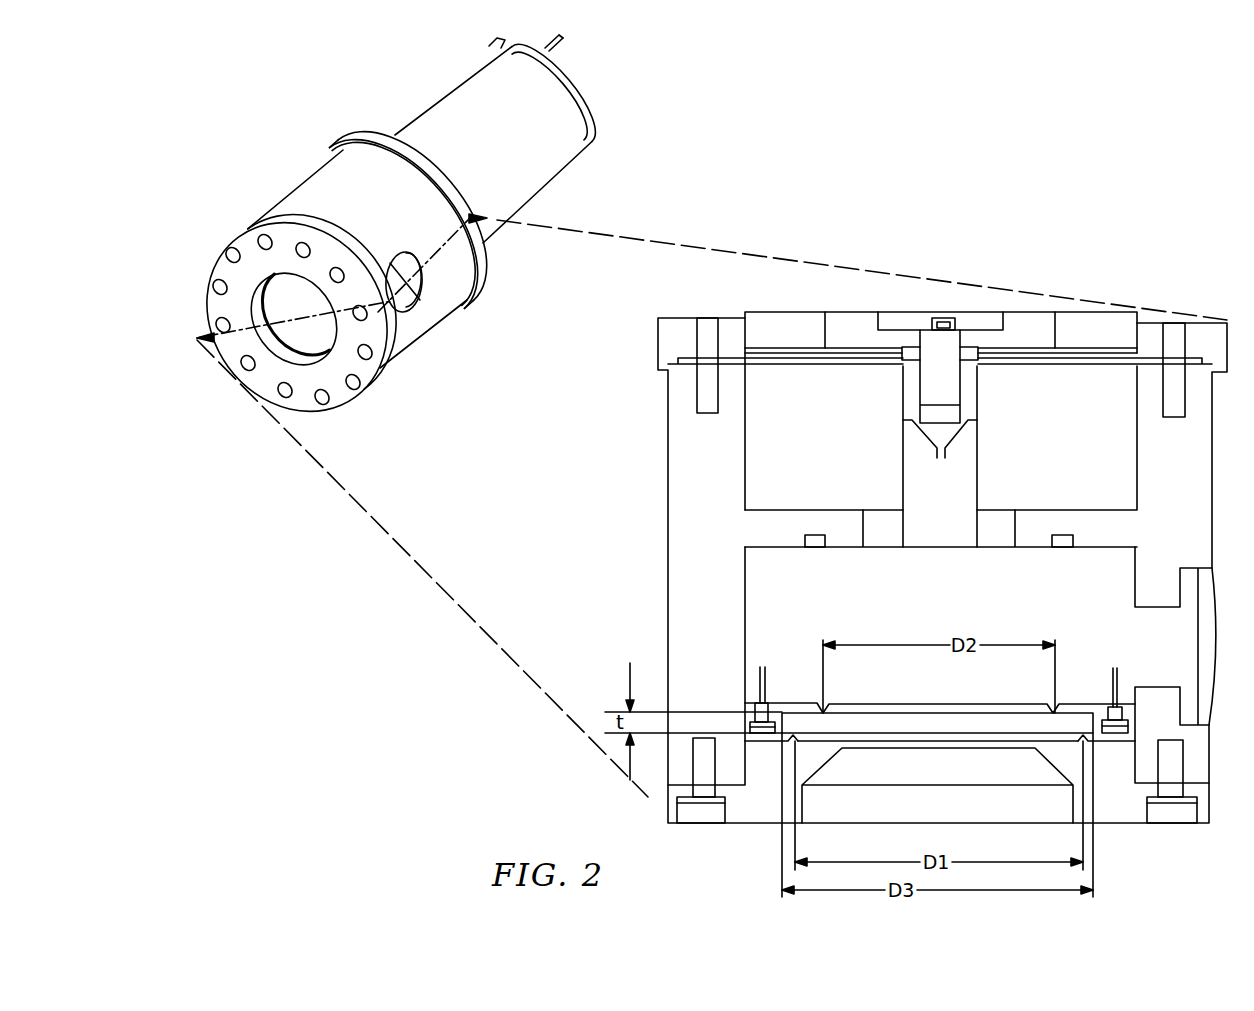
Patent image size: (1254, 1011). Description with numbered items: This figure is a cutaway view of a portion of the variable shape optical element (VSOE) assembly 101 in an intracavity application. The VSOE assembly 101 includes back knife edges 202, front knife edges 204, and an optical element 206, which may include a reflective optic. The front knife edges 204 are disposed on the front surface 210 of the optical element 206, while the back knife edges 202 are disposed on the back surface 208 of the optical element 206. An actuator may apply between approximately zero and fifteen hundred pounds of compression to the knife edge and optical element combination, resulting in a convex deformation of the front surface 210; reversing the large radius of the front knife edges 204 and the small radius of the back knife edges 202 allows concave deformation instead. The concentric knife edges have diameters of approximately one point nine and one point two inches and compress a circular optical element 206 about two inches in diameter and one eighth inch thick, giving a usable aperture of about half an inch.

The VSOE assembly 101 is at (262, 162).
The back knife edges 202 is at (822, 703).
The front knife edges 204 is at (793, 740).
The optical element 206 is at (945, 726).
The back surface 208 is at (902, 712).
The front surface 210 is at (815, 740).